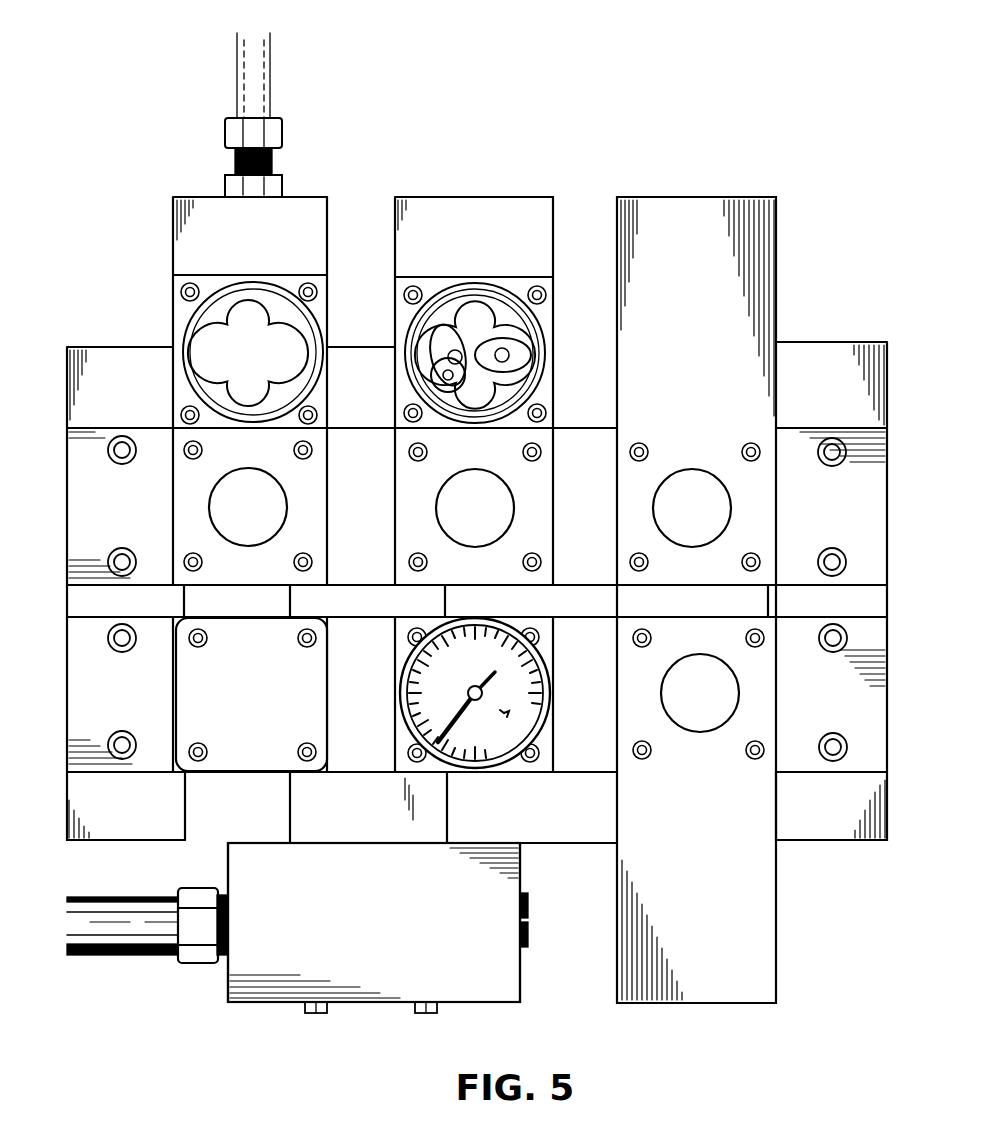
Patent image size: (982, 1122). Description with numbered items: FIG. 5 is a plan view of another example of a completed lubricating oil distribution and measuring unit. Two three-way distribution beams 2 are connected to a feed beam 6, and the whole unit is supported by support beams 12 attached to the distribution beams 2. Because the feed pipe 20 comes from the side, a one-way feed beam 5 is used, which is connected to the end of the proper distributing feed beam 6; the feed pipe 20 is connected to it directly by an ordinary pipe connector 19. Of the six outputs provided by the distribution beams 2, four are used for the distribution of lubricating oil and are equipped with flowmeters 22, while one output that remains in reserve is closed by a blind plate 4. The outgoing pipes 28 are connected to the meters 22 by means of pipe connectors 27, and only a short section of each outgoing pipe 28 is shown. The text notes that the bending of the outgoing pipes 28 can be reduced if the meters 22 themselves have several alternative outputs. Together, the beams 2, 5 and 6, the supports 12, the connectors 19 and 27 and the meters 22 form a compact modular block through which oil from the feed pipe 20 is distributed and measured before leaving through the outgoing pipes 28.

The three-way distribution beam 2 is at (576, 524).
The blind plate 4 is at (242, 695).
The one-way feed beam 5 is at (292, 929).
The feed beam 6 is at (359, 817).
The support beam 12 is at (94, 402).
The pipe connector 19 is at (210, 928).
The feed pipe 20 is at (120, 932).
The flowmeter 22 is at (231, 257).
The pipe connector 27 is at (280, 138).
The outgoing pipe 28 is at (255, 77).